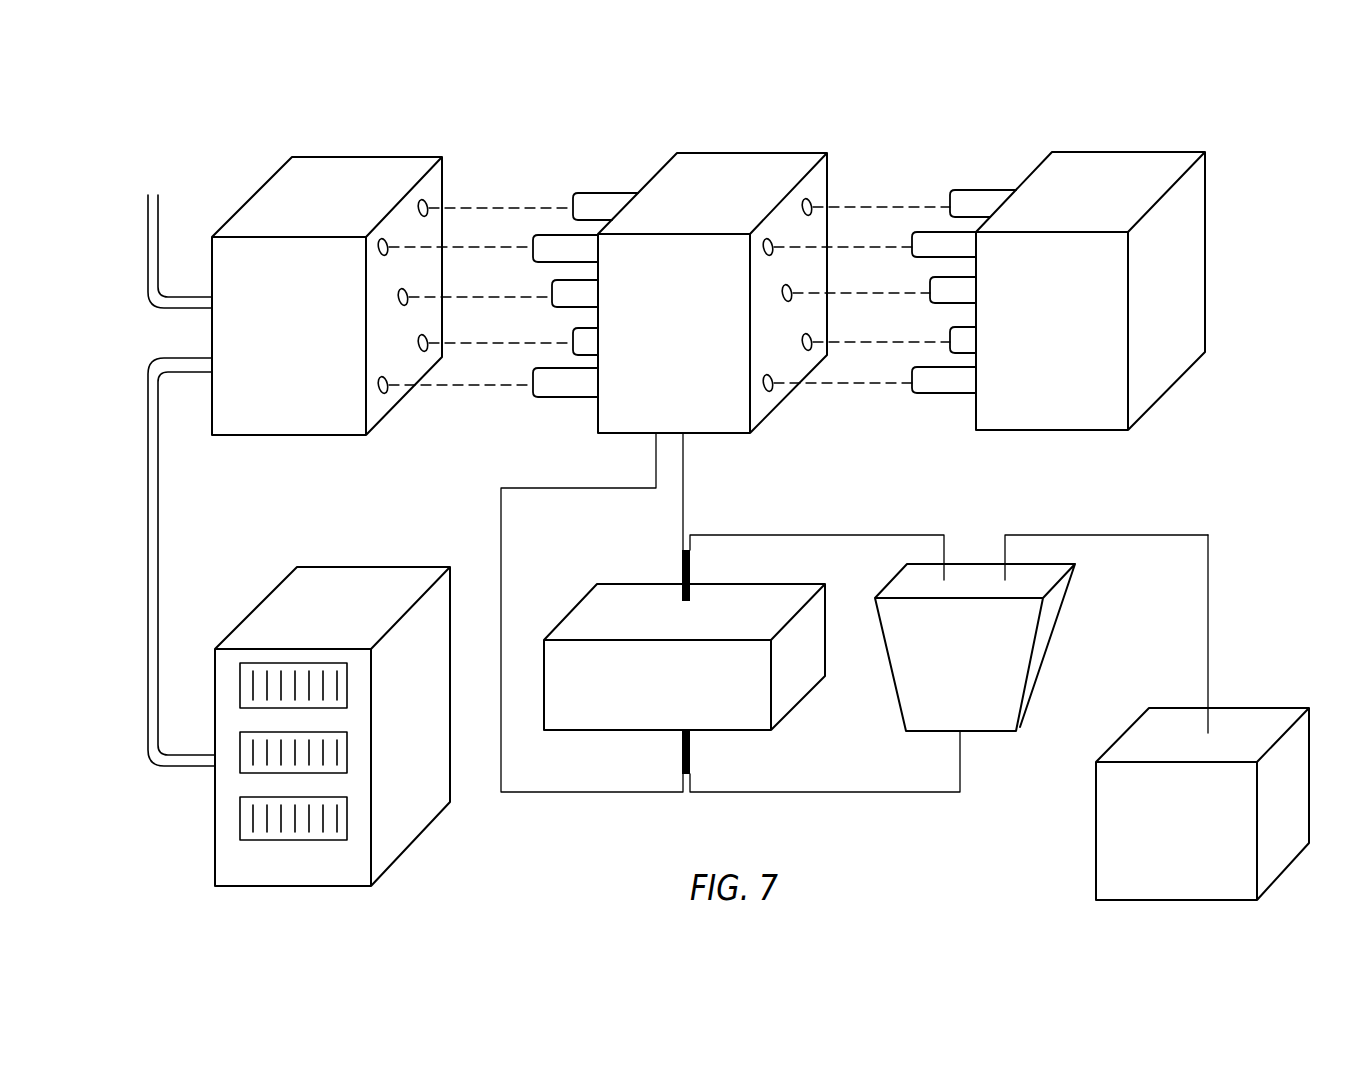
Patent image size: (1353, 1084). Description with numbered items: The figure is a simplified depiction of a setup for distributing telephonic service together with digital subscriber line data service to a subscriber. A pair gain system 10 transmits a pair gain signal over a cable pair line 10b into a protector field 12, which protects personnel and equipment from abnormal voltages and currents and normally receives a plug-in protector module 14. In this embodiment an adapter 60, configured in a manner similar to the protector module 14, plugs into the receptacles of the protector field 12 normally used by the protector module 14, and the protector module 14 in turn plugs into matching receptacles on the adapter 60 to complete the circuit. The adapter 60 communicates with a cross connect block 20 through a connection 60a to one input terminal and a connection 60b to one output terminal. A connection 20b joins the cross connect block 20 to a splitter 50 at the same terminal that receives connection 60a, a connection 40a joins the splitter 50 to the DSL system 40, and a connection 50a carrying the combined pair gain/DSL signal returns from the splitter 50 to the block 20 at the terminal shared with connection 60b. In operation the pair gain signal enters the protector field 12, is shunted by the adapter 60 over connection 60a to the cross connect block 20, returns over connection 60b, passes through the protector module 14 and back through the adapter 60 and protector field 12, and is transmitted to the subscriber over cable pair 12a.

The pair gain system 10 is at (427, 558).
The cable pair line 10b is at (157, 562).
The protector field 12 is at (421, 150).
The cable pair 12a is at (154, 218).
The protector module 14 is at (1177, 142).
The cross connect block 20 is at (826, 615).
The connection 20b is at (944, 548).
The DSL system 40 is at (1310, 827).
The connection 40a is at (1209, 637).
The splitter 50 is at (1046, 693).
The connection 50a is at (961, 762).
The adapter 60 is at (805, 147).
The connection 60a is at (704, 517).
The connection 60b is at (592, 612).